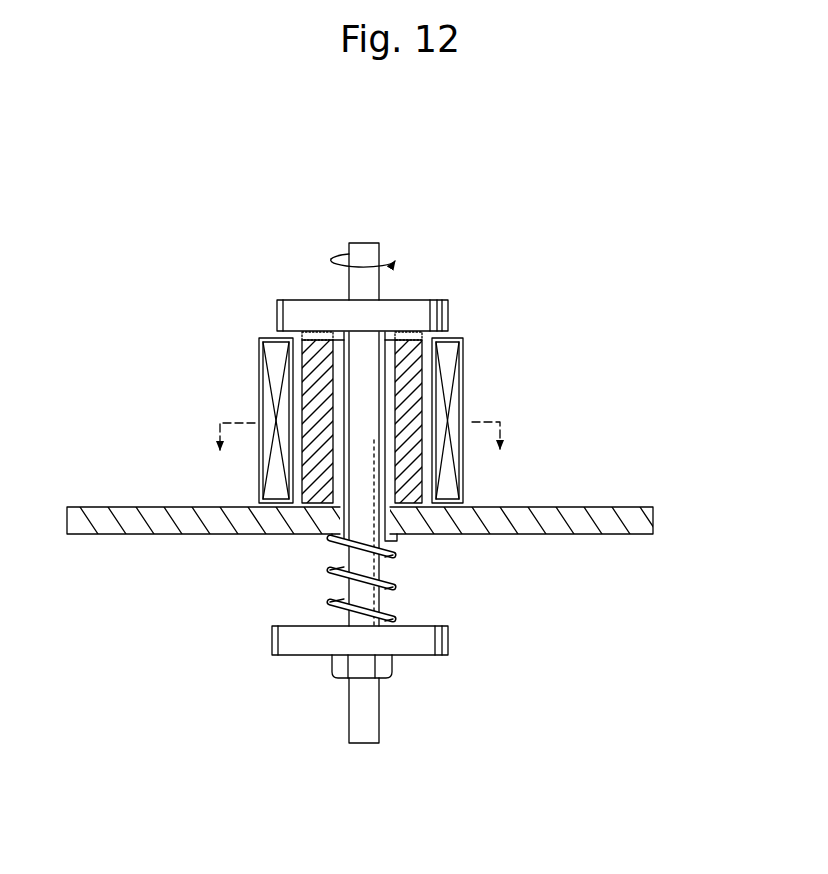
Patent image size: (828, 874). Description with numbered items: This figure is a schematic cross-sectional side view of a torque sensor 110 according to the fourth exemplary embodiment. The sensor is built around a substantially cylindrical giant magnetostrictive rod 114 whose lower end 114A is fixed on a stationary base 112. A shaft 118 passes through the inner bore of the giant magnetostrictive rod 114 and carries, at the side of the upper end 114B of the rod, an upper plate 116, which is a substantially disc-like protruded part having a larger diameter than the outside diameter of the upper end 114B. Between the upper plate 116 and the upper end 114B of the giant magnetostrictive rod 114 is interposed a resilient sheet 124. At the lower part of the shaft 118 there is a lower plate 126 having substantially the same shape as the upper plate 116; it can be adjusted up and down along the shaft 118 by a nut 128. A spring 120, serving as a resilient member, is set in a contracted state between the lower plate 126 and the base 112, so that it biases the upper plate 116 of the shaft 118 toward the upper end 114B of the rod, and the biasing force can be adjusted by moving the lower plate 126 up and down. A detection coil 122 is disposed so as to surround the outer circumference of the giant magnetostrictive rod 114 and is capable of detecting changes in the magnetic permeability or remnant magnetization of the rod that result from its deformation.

The torque sensor 110 is at (495, 182).
The base 112 is at (656, 517).
The giant magnetostrictive rod 114 is at (412, 393).
The lower end 114A is at (409, 514).
The upper end 114B is at (412, 321).
The upper plate 116 is at (412, 301).
The shaft 118 is at (381, 703).
The spring 120 is at (393, 585).
The detection coil 122 is at (447, 482).
The resilient sheet 124 is at (413, 351).
The lower plate 126 is at (450, 635).
The nut 128 is at (393, 670).